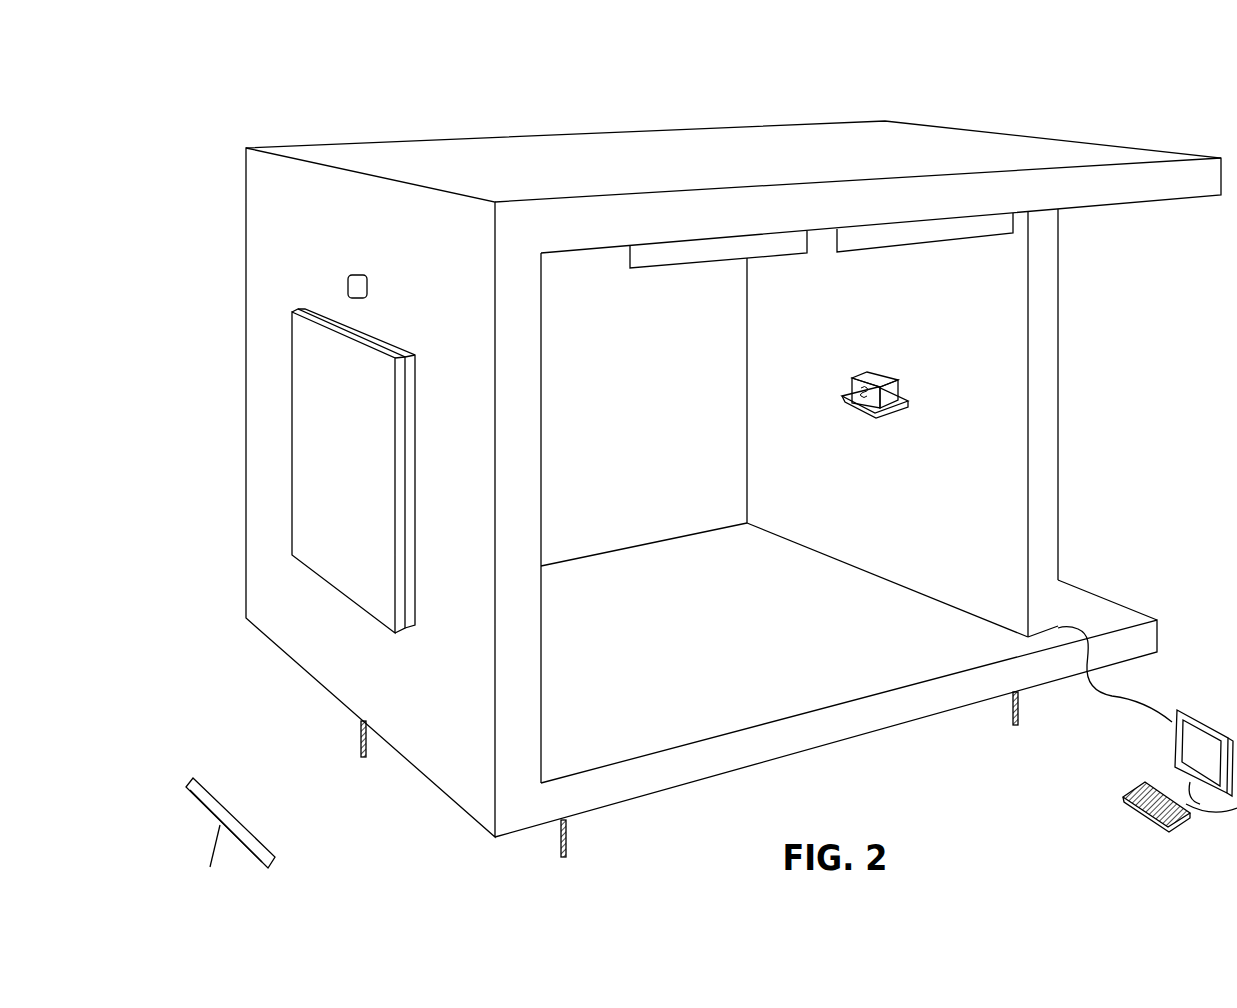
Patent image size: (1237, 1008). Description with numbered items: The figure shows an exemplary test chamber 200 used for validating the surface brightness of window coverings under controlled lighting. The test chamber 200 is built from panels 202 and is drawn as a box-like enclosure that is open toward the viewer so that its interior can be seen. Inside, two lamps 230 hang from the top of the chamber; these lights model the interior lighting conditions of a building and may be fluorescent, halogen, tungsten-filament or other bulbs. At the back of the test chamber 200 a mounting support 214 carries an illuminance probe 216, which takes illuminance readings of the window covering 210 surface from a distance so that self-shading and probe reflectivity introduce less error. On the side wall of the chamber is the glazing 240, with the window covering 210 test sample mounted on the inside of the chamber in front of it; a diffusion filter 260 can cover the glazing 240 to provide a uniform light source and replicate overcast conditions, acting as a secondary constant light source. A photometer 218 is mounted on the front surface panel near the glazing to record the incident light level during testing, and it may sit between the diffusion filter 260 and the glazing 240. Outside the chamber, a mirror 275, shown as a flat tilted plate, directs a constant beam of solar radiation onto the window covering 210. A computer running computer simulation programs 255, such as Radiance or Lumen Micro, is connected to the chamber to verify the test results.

The test chamber 200 is at (1139, 131).
The panels 202 is at (1044, 377).
The lamps 230 is at (733, 247).
The photometer 218 is at (343, 287).
The glazing 240 is at (350, 457).
The diffusion filter 260 is at (303, 378).
The window covering 210 is at (413, 517).
The illuminance probe 216 is at (867, 375).
The mounting support 214 is at (895, 412).
The computer simulation programs 255 is at (1135, 800).
The mirror 275 is at (255, 838).